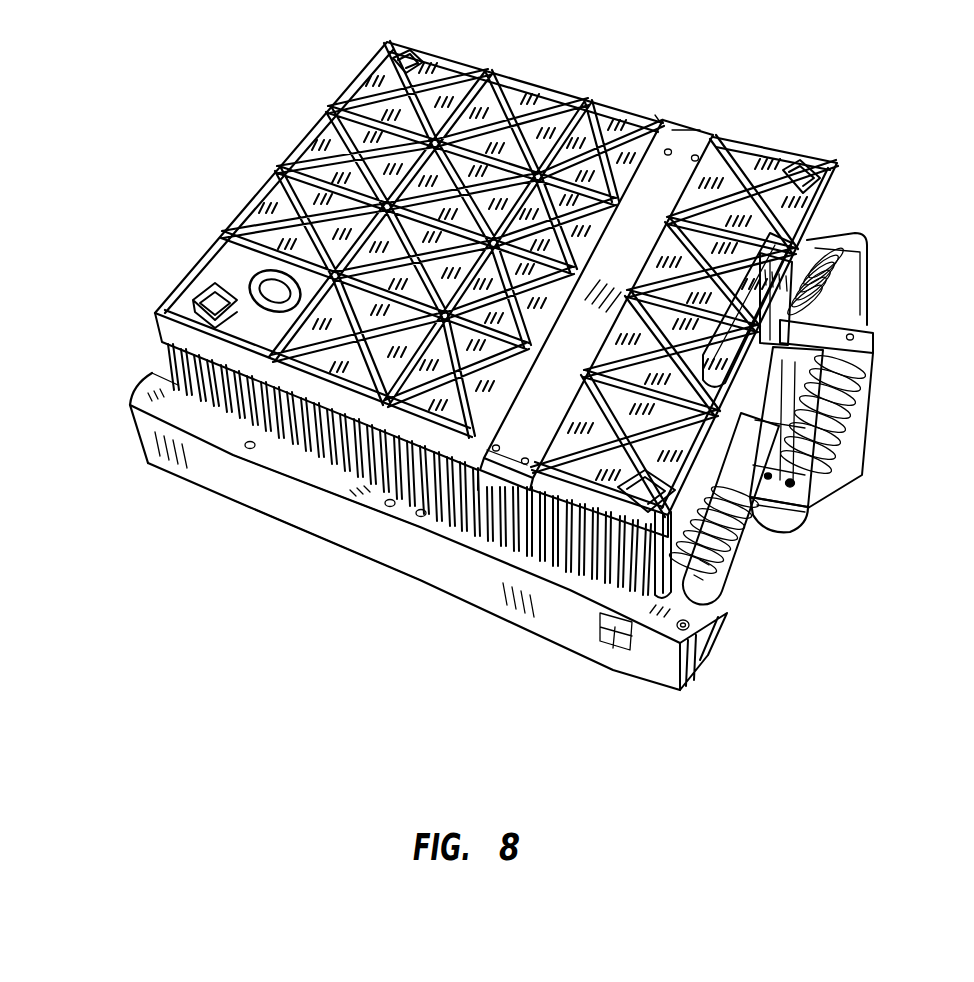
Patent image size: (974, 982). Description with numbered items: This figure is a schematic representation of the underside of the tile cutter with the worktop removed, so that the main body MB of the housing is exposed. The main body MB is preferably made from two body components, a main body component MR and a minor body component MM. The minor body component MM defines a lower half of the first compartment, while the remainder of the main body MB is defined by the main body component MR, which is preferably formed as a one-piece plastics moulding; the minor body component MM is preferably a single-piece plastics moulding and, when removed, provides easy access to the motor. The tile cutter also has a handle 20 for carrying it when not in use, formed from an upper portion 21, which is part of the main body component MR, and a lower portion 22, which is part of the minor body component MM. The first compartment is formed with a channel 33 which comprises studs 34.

The handle 20 is at (877, 334).
The upper portion 21 is at (782, 528).
The lower portion 22 is at (803, 500).
The channel 33 is at (681, 148).
The studs 34 is at (497, 448).
The main body component MR is at (282, 500).
The main body MB is at (373, 587).
The minor body component MM is at (593, 530).